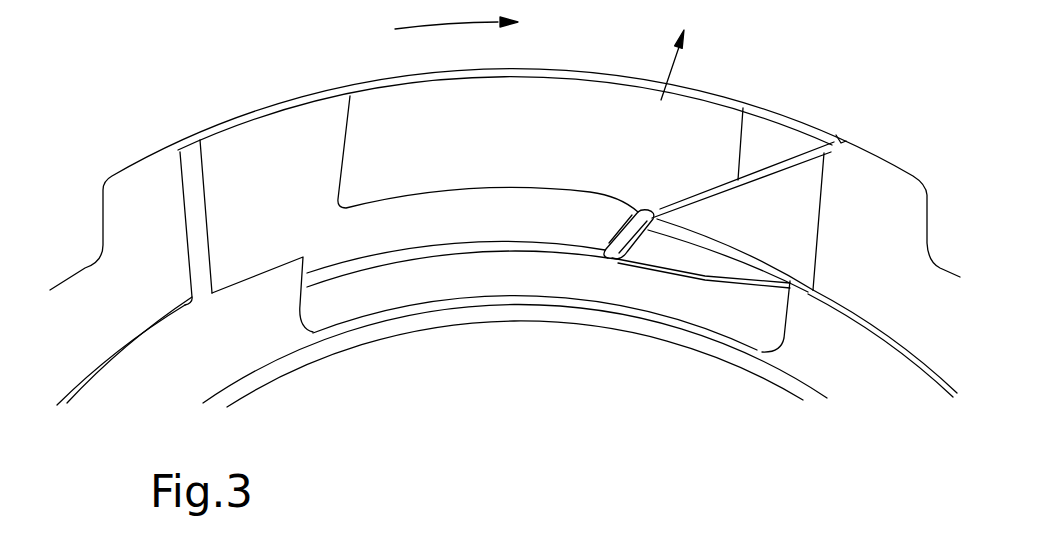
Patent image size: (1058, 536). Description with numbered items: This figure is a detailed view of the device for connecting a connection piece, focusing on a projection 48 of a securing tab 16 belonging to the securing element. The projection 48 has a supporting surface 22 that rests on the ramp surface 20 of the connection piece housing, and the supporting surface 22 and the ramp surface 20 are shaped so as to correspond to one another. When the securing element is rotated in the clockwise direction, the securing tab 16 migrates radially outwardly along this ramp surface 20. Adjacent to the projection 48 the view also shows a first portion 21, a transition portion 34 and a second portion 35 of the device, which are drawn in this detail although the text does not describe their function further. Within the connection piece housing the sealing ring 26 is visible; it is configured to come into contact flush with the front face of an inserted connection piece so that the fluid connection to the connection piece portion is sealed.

The securing tab 16 is at (700, 84).
The ramp surface 20 is at (766, 160).
The first portion 21 is at (839, 192).
The supporting surface 22 is at (692, 211).
The sealing ring 26 is at (435, 287).
The transition portion 34 is at (652, 208).
The second portion 35 is at (616, 216).
The projection 48 is at (560, 94).